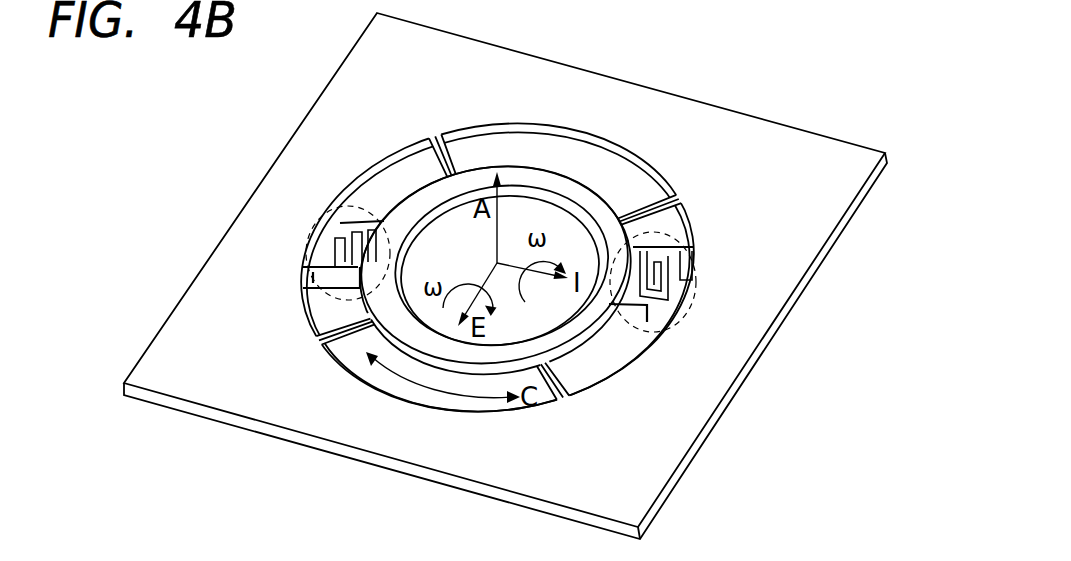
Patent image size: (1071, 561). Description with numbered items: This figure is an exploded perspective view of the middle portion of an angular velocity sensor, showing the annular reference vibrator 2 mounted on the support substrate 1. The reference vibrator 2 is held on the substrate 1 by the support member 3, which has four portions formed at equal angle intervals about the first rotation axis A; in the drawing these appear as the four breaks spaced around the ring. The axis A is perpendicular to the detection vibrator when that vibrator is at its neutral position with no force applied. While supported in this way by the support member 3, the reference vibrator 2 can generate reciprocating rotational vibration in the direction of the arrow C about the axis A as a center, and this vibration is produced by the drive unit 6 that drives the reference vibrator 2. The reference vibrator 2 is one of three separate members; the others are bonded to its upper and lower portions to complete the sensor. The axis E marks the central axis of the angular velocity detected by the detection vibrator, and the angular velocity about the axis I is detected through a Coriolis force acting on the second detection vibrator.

The support substrate 1 is at (297, 174).
The reference vibrator 2 is at (587, 328).
The support member 3 is at (338, 327).
The drive unit 6 is at (338, 223).